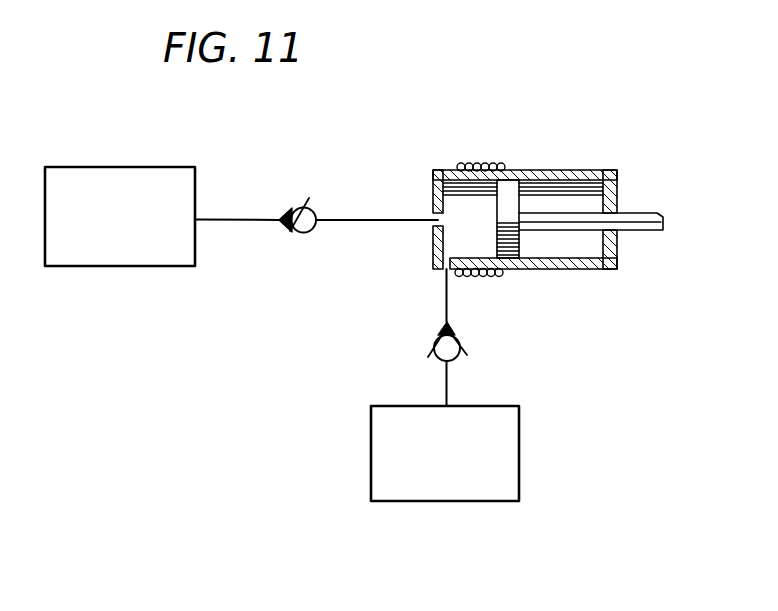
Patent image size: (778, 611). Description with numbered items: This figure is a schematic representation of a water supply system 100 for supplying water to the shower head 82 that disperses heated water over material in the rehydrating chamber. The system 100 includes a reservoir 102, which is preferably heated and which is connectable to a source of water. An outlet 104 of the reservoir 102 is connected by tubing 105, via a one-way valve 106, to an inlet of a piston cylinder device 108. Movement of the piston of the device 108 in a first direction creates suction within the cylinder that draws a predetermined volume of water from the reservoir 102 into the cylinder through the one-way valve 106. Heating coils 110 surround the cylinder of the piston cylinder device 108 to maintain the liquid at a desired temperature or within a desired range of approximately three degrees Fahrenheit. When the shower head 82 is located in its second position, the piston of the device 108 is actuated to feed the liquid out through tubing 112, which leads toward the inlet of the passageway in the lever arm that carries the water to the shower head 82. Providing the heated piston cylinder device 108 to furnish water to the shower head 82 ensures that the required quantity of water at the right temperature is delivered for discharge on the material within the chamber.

The water supply system 100 is at (357, 187).
The reservoir 102 is at (113, 257).
The outlet 104 is at (198, 221).
The tubing 105 is at (227, 214).
The one-way valve 106 is at (304, 234).
The piston cylinder device 108 is at (582, 171).
The heating coils 110 is at (473, 164).
The tubing 112 is at (442, 297).
The shower head 82 is at (513, 462).